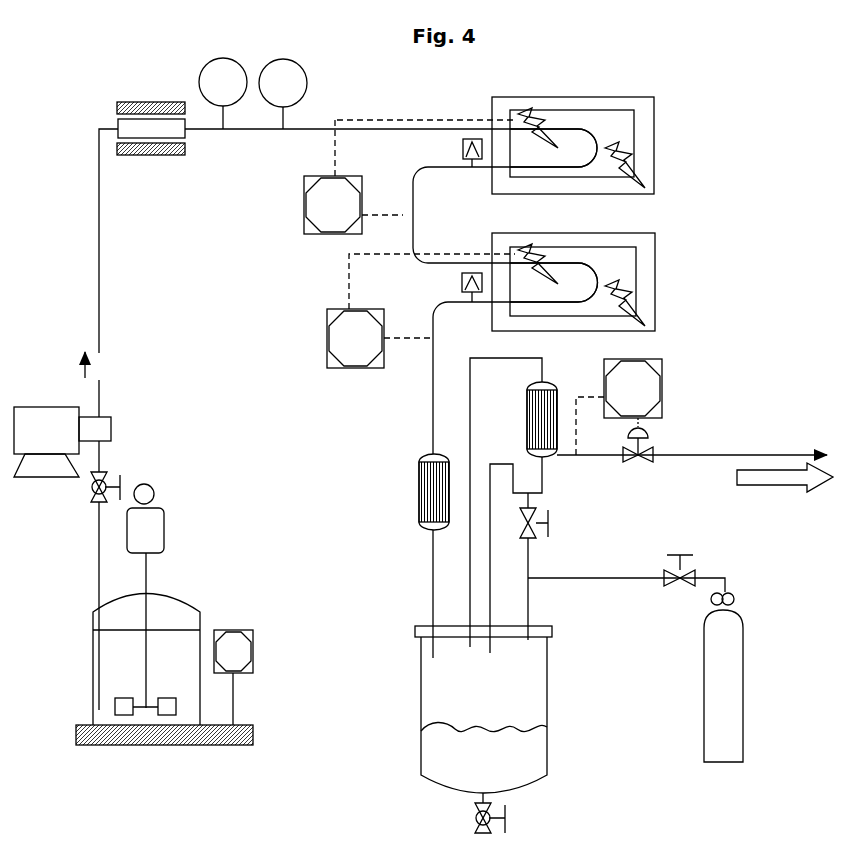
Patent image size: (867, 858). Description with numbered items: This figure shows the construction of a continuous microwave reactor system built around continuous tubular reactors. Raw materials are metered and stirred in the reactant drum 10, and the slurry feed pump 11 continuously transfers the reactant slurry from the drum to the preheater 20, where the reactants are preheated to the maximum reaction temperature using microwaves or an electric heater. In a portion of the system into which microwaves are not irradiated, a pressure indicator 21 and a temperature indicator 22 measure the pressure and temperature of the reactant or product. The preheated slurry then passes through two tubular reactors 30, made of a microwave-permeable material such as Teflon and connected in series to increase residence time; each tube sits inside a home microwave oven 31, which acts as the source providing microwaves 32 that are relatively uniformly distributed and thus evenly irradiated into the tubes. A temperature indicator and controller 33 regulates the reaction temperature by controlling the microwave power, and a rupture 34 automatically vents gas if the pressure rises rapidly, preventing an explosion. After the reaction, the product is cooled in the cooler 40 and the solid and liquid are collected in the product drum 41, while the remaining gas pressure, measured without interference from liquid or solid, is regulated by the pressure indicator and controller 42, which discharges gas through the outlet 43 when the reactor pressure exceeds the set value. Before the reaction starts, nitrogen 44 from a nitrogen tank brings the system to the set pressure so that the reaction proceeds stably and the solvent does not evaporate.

The reactant drum 10 is at (118, 650).
The slurry feed pump 11 is at (56, 425).
The preheater 20 is at (135, 127).
The pressure indicator 21 is at (197, 82).
The temperature indicator 22 is at (312, 82).
The tubular reactors 30 is at (596, 134).
The microwave ovens 31 is at (652, 115).
The microwaves 32 is at (643, 191).
The temperature indicator and controller 33 is at (303, 212).
The rupture 34 is at (455, 157).
The cooler 40 is at (413, 491).
The product drum 41 is at (427, 673).
The pressure indicator and controller 42 is at (667, 392).
The outlet 43 is at (772, 452).
The nitrogen 44 is at (705, 690).